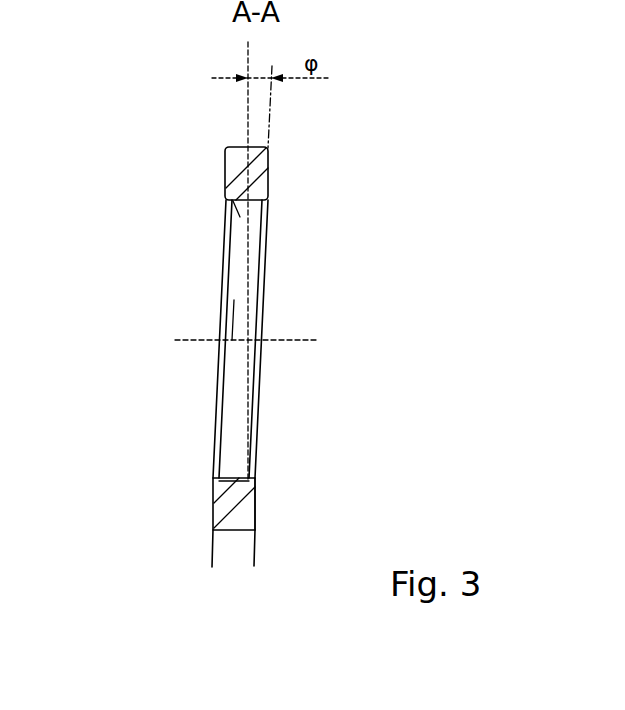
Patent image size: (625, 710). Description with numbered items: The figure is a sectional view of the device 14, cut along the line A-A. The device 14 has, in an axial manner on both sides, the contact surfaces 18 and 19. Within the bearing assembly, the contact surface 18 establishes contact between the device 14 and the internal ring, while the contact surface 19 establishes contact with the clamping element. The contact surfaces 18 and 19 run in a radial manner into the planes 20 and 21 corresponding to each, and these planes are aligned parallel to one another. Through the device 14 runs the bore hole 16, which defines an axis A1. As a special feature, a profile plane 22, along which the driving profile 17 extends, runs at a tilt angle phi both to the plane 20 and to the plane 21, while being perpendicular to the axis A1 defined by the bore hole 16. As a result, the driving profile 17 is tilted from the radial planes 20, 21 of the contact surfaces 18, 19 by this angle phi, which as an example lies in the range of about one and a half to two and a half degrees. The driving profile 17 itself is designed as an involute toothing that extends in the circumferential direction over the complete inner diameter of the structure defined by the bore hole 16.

The device 14 is at (190, 143).
The bore hole 16 is at (235, 315).
The driving profile 17 is at (224, 233).
The contact surface 18 is at (226, 172).
The contact surface 19 is at (258, 503).
The plane 20 is at (213, 548).
The plane 21 is at (258, 547).
The profile plane 22 is at (245, 58).
The axis A1 is at (302, 340).